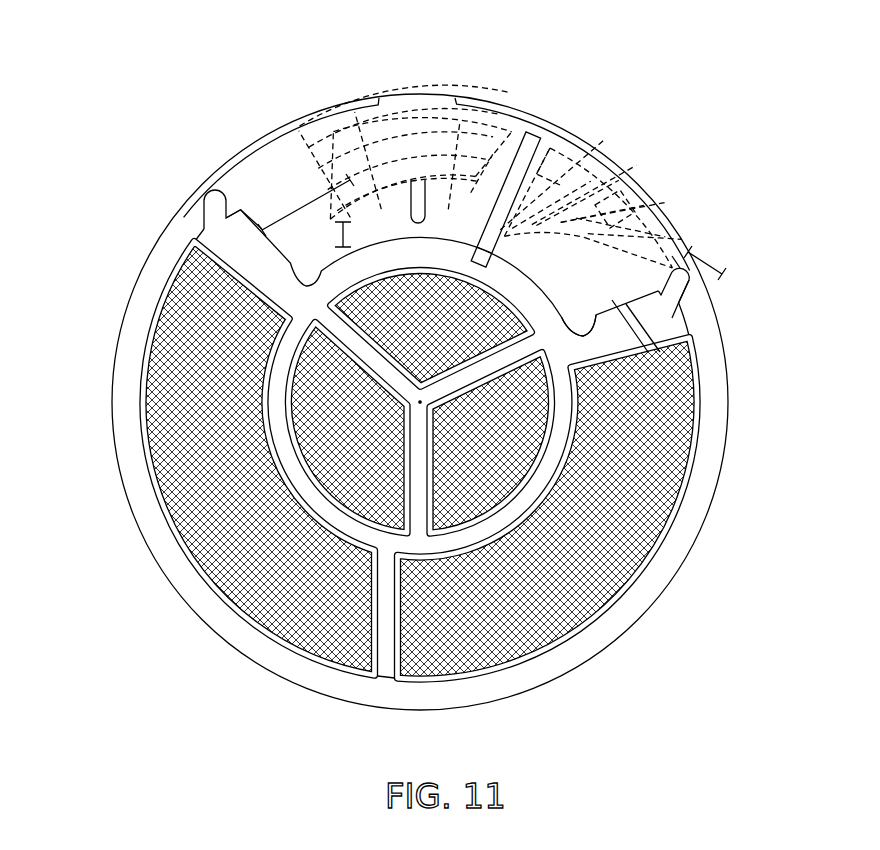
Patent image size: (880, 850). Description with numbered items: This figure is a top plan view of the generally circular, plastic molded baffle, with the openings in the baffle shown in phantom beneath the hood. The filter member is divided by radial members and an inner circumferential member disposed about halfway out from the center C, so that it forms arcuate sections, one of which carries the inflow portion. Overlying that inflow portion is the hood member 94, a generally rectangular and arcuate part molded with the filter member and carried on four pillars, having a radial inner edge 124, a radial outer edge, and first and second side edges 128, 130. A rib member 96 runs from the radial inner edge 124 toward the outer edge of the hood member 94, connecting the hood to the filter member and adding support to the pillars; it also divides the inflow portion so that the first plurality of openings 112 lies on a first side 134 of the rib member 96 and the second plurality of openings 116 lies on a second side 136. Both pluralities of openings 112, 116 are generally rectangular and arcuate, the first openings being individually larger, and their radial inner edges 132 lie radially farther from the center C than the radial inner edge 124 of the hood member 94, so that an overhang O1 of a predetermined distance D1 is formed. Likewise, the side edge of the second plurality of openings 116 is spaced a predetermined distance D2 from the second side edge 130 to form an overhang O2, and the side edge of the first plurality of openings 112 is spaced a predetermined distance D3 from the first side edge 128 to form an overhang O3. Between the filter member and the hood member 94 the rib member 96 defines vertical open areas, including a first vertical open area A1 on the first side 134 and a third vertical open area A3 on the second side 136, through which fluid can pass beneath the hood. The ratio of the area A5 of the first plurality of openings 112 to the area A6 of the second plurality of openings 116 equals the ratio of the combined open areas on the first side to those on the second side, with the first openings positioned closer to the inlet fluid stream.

The first plurality of openings 112 is at (457, 104).
The first side of the rib member 134 is at (532, 140).
The rib member 96 is at (544, 140).
The second side of the rib member 136 is at (564, 142).
The hood member 94 is at (612, 203).
The second plurality of openings 116 is at (636, 219).
The radial inner edges of the openings 132 is at (413, 213).
The first side edge 128 is at (240, 228).
The second side edge 130 is at (705, 340).
The radial inner edge 124 is at (447, 243).
The first vertical open area A1 is at (400, 300).
The third vertical open area A3 is at (678, 300).
The area of the first plurality of openings A5 is at (333, 150).
The area of the second plurality of openings A6 is at (637, 160).
The overhang O1 is at (413, 230).
The overhang O2 is at (597, 335).
The overhang O3 is at (257, 198).
The predetermined distance D1 is at (748, 400).
The predetermined distance D2 is at (722, 270).
The predetermined distance D3 is at (306, 205).
The center C is at (420, 404).